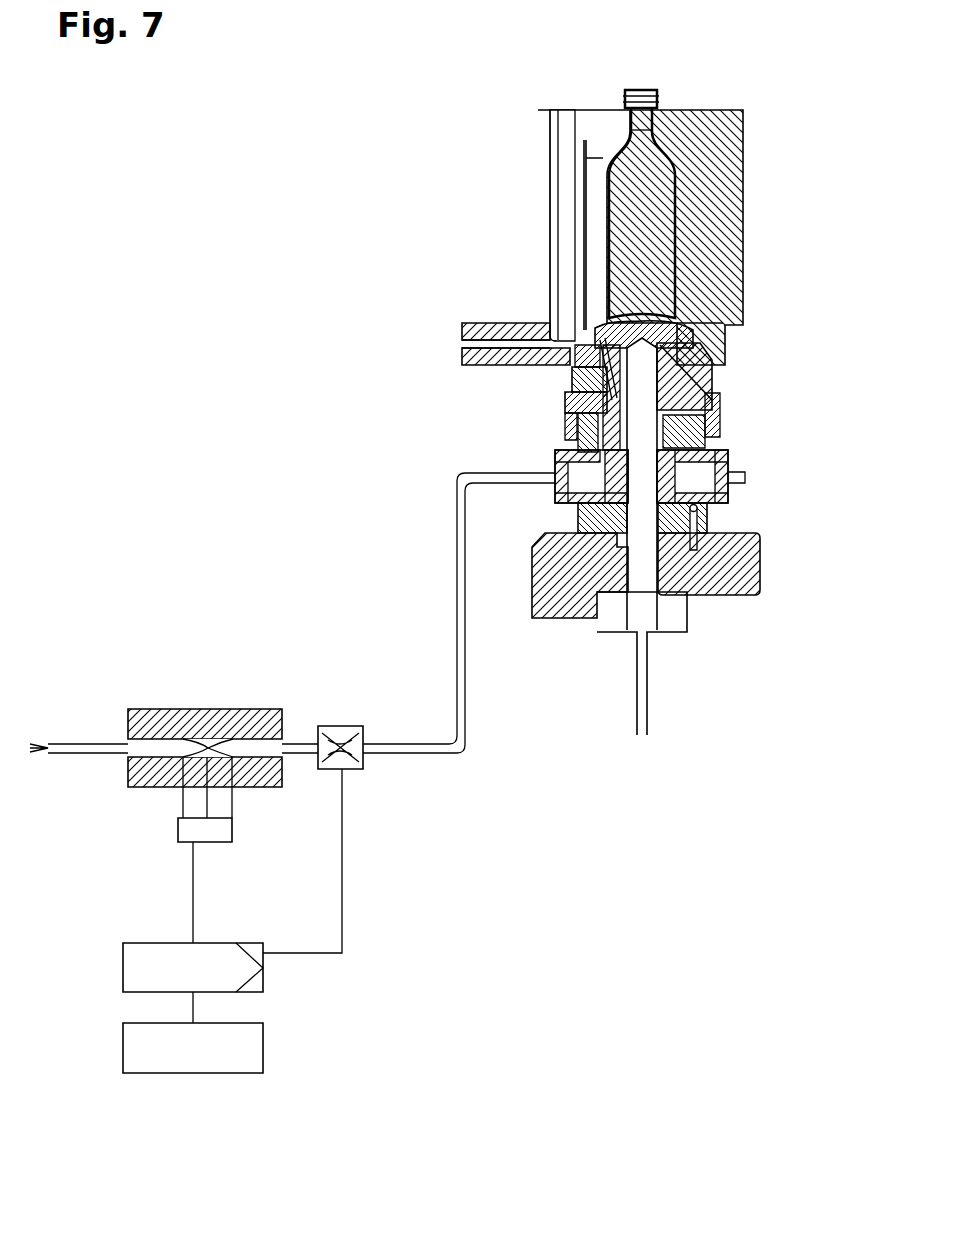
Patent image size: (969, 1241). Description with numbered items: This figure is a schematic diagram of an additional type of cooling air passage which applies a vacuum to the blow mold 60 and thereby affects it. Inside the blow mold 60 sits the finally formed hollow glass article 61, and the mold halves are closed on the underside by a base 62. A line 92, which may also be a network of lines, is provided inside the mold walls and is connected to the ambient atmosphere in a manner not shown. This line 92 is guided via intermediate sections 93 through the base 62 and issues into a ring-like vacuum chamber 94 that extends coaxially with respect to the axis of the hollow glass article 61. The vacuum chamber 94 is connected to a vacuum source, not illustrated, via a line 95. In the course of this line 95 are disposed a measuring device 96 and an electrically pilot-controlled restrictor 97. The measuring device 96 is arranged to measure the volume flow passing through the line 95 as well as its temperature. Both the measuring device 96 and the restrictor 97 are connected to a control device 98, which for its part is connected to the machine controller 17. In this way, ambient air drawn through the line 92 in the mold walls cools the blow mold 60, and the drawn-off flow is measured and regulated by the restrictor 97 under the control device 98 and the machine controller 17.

The machine controller 17 is at (263, 1048).
The blow mold 60 is at (727, 200).
The hollow glass article 61 is at (640, 107).
The base 62 is at (720, 355).
The line 92 is at (583, 205).
The intermediate sections 93 is at (597, 297).
The vacuum chamber 94 is at (580, 466).
The line 95 is at (73, 743).
The measuring device 96 is at (203, 723).
The restrictor 97 is at (335, 731).
The control device 98 is at (263, 982).